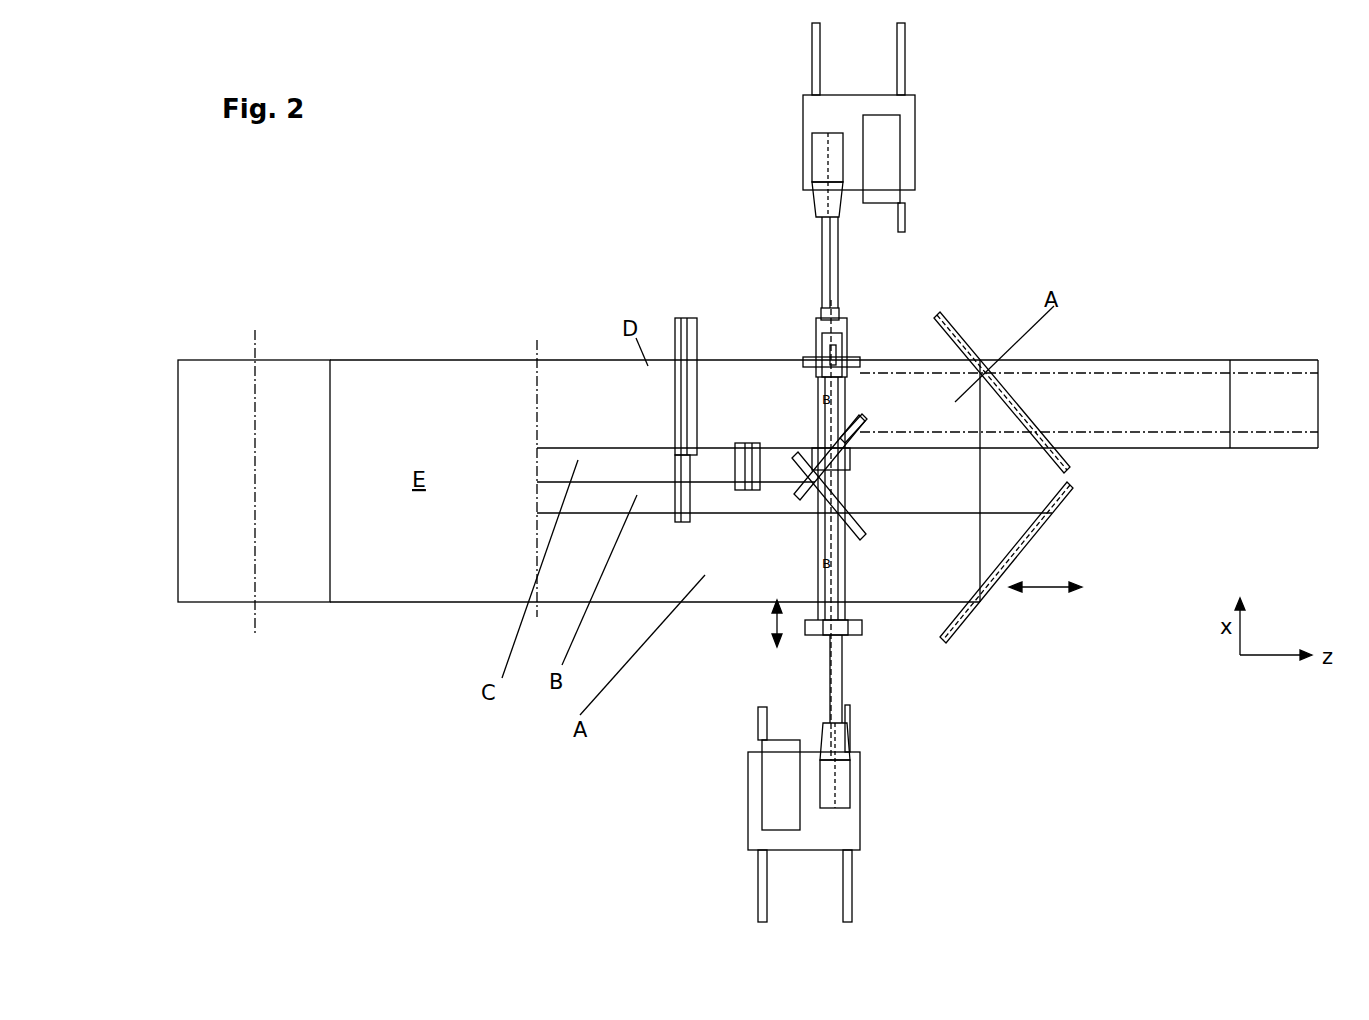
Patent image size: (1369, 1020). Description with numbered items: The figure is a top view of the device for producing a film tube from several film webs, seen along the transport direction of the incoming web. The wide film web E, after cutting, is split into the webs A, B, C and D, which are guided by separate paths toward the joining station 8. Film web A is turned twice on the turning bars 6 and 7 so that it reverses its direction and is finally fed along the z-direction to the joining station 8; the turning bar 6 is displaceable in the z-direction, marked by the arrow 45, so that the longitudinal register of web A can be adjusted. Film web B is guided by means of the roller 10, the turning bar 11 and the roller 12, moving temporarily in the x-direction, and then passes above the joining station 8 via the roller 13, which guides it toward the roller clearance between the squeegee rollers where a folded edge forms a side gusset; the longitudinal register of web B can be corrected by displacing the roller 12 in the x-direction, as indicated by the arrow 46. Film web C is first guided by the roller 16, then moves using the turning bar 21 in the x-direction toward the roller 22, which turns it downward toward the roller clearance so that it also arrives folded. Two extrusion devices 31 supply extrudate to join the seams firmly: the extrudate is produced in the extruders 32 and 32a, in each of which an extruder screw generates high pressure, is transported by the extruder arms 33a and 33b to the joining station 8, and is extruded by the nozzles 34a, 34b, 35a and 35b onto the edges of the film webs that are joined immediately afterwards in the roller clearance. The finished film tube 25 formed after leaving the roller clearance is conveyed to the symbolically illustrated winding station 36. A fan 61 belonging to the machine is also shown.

The turning bar 6 is at (1068, 492).
The turning bar 7 is at (1002, 390).
The joining station 8 is at (815, 340).
The roller 10 is at (693, 487).
The turning bar 11 is at (860, 537).
The roller 12 is at (855, 633).
The roller 13 is at (850, 452).
The roller 16 is at (680, 423).
The turning bar 21 is at (861, 417).
The roller 22 is at (831, 460).
The film tube 25 is at (1193, 402).
The extrusion device 31 is at (958, 88).
The extruder 32 is at (828, 148).
The extruder 32a is at (845, 782).
The extruder arm 33a is at (822, 655).
The extruder arm 33b is at (827, 260).
The nozzle 34a is at (845, 465).
The nozzle 34b is at (845, 337).
The nozzle 35a is at (831, 462).
The nozzle 35b is at (817, 353).
The winding station 36 is at (1295, 388).
The arrow 45 is at (1045, 603).
The arrow 46 is at (760, 623).
The fan 61 is at (777, 815).